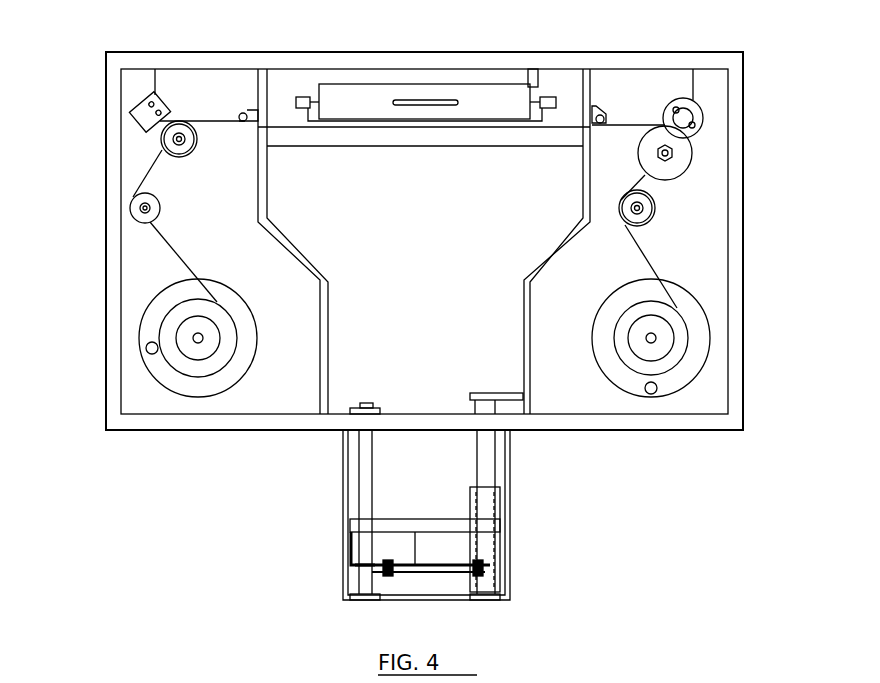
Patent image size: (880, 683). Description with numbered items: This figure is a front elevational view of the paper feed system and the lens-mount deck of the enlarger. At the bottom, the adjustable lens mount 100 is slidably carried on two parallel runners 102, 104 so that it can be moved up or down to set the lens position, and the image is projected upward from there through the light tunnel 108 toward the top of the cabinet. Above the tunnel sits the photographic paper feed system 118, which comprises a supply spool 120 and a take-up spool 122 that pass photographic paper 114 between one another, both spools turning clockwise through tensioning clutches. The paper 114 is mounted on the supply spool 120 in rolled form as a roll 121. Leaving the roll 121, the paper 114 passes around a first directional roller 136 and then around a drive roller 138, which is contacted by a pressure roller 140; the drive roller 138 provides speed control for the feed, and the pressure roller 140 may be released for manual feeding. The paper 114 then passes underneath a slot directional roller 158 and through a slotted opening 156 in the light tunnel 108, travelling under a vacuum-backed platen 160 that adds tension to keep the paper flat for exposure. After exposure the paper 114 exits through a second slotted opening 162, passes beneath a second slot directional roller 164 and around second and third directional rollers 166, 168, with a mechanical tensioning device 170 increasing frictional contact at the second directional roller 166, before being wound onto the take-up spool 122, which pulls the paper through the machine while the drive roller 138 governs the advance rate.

The adjustable lens mount 100 is at (441, 524).
The parallel runner 102 is at (364, 489).
The parallel runner 104 is at (487, 465).
The light tunnel 108 is at (320, 378).
The photographic paper 114 is at (652, 262).
The photographic paper feed system 118 is at (702, 247).
The supply spool 120 is at (656, 338).
The roll 121 is at (662, 368).
The take-up spool 122 is at (196, 341).
The first directional roller 136 is at (645, 208).
The drive roller 138 is at (670, 154).
The pressure roller 140 is at (700, 118).
The slotted opening 156 is at (578, 122).
The slot directional roller 158 is at (605, 118).
The vacuum-backed platen 160 is at (372, 95).
The second slotted opening 162 is at (275, 122).
The second slot directional roller 164 is at (243, 113).
The second directional roller 166 is at (172, 146).
The third directional roller 168 is at (132, 208).
The mechanical tensioning device 170 is at (148, 112).